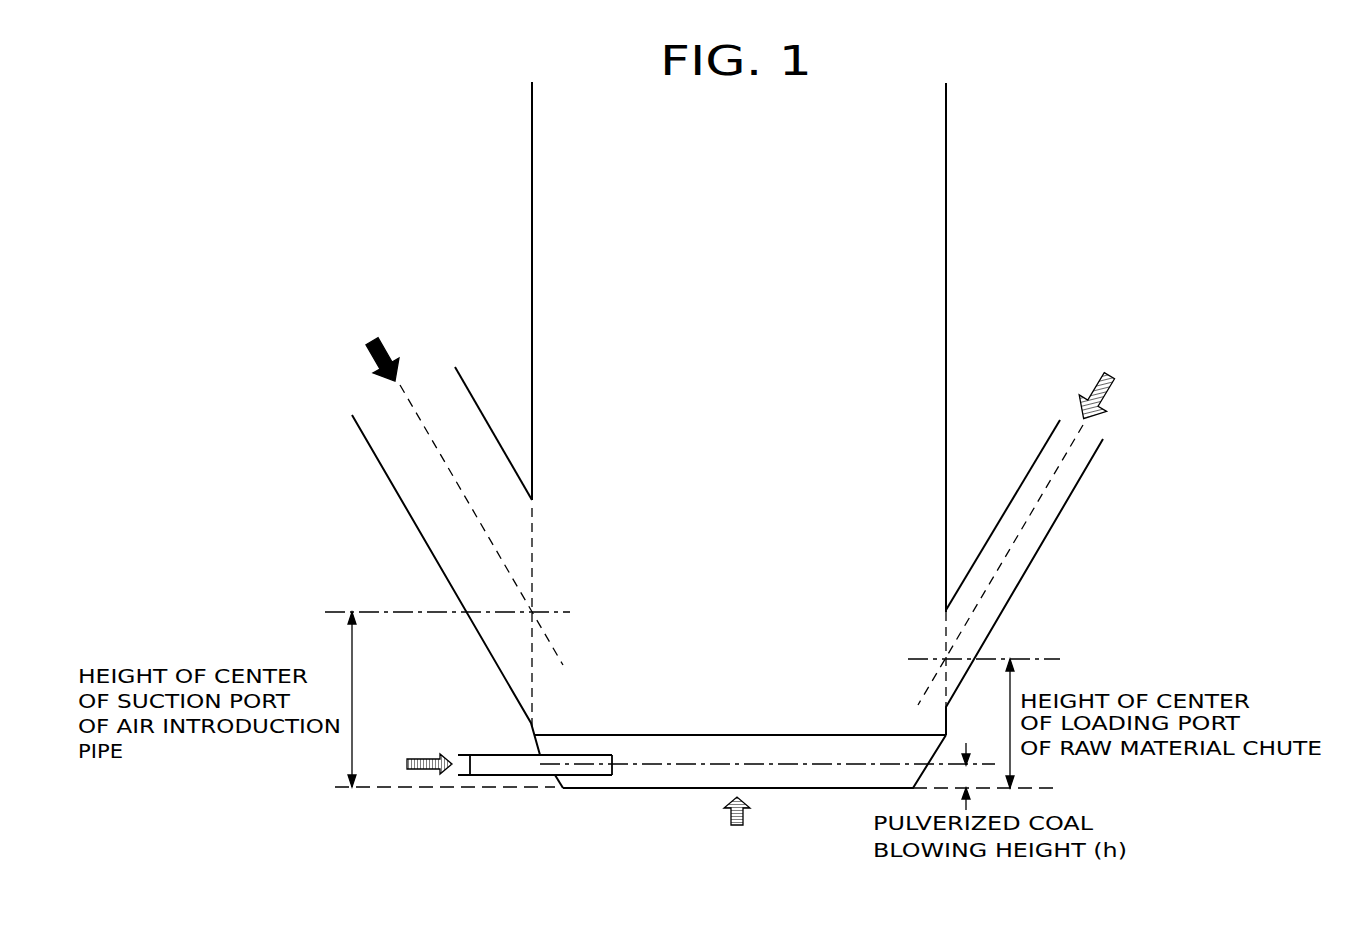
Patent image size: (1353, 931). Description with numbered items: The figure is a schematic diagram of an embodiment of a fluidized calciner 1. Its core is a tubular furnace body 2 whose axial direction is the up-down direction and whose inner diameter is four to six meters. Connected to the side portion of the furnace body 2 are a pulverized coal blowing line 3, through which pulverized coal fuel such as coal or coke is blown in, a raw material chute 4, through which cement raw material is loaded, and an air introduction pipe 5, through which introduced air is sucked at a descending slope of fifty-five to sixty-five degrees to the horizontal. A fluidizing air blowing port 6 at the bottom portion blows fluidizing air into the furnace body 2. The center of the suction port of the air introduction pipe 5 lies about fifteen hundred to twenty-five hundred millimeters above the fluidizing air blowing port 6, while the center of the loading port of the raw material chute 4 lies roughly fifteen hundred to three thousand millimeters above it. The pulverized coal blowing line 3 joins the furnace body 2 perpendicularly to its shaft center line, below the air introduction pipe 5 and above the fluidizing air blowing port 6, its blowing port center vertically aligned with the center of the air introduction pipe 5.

The fluidized calciner 1 is at (985, 181).
The furnace body 2 is at (905, 260).
The pulverized coal blowing line 3 is at (508, 765).
The raw material chute 4 is at (1013, 553).
The air introduction pipe 5 is at (461, 551).
The fluidizing air blowing port 6 is at (748, 792).